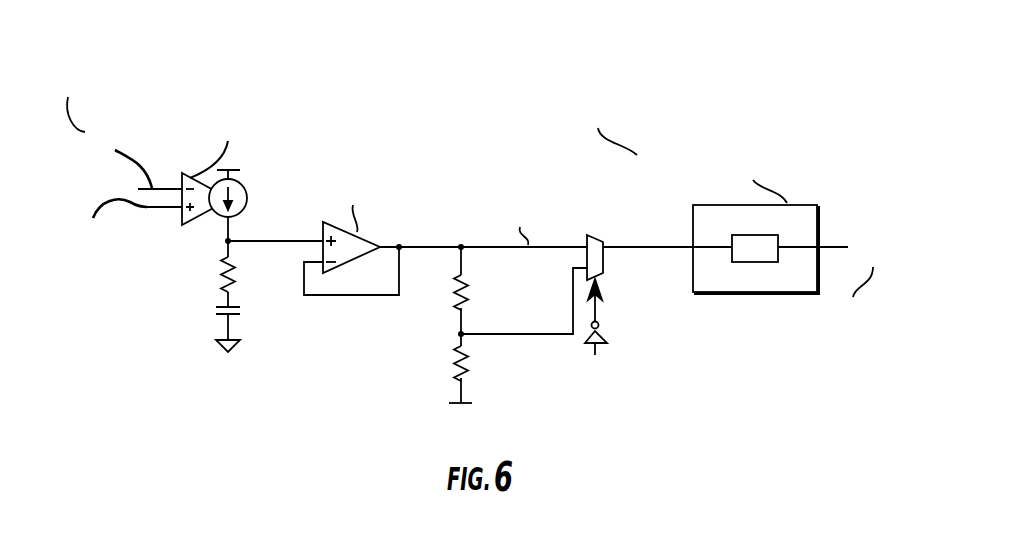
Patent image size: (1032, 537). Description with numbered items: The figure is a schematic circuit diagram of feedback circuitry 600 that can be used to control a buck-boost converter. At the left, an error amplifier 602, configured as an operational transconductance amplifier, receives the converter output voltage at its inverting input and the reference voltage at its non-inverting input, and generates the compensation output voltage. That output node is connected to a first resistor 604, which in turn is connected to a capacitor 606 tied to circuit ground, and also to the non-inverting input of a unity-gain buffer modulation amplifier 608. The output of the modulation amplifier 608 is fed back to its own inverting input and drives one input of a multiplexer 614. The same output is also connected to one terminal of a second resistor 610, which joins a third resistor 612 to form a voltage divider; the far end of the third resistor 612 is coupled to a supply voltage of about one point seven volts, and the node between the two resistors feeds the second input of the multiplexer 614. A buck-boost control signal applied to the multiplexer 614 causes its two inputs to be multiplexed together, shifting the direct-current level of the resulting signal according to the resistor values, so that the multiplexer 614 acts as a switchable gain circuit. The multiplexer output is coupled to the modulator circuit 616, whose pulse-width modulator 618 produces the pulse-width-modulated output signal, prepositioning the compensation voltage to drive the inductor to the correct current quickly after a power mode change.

The feedback circuitry 600 is at (658, 44).
The error amplifier 602 is at (228, 105).
The first resistor 604 is at (235, 279).
The capacitor 606 is at (237, 312).
The modulation amplifier (MODAMP) 608 is at (363, 172).
The second resistor 610 is at (452, 280).
The third resistor 612 is at (452, 355).
The multiplexer 614 is at (595, 235).
The modulator circuit 616 is at (740, 157).
The PWM modulator 618 is at (763, 262).